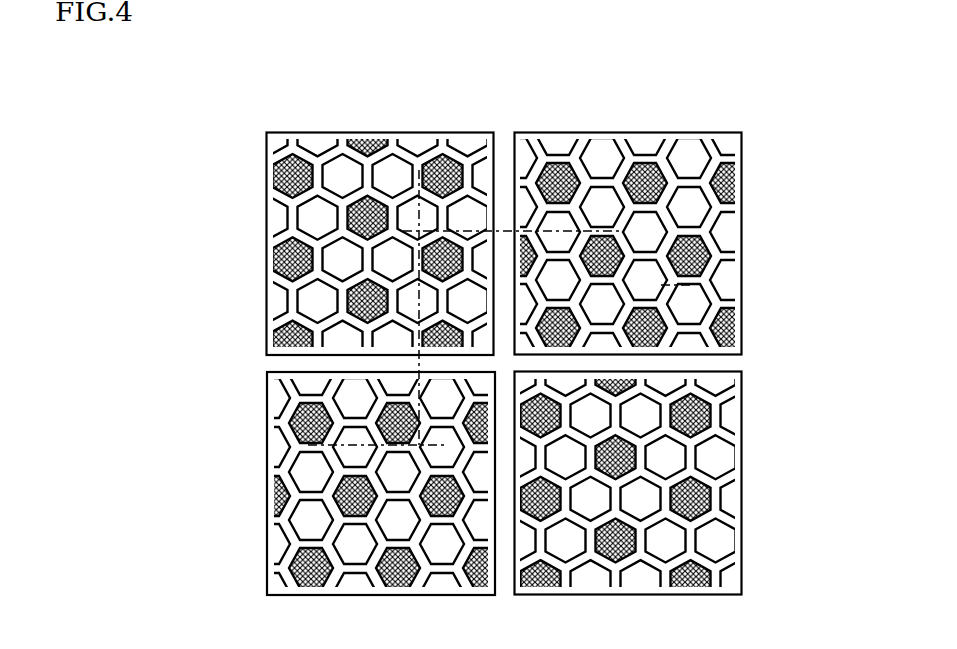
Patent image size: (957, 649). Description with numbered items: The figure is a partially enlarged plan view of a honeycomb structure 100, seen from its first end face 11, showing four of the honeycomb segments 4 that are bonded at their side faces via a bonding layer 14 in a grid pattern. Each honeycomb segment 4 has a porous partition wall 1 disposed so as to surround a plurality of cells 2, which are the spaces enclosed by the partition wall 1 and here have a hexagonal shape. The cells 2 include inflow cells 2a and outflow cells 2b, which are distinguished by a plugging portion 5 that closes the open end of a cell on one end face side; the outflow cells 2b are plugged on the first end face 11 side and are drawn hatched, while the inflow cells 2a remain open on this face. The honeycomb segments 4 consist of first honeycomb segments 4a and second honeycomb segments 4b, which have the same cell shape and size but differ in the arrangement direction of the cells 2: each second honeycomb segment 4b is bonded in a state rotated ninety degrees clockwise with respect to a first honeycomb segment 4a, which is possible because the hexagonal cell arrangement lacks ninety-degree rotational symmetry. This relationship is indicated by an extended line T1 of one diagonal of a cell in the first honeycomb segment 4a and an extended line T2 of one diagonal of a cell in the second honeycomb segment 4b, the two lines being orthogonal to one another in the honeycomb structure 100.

The honeycomb structure 100 is at (818, 30).
The first end face 11 is at (250, 114).
The partition wall 1 is at (376, 164).
The cells 2 is at (613, 148).
The inflow cells 2a is at (390, 183).
The outflow cells 2b is at (460, 168).
The honeycomb segments 4 is at (506, 331).
The first honeycomb segments 4a is at (258, 255).
The second honeycomb segments 4b is at (752, 288).
The plugging portion 5 is at (315, 162).
The bonding layer 14 is at (690, 366).
The extended line of diagonal line T1 is at (403, 231).
The extended line of diagonal line T2 is at (690, 285).